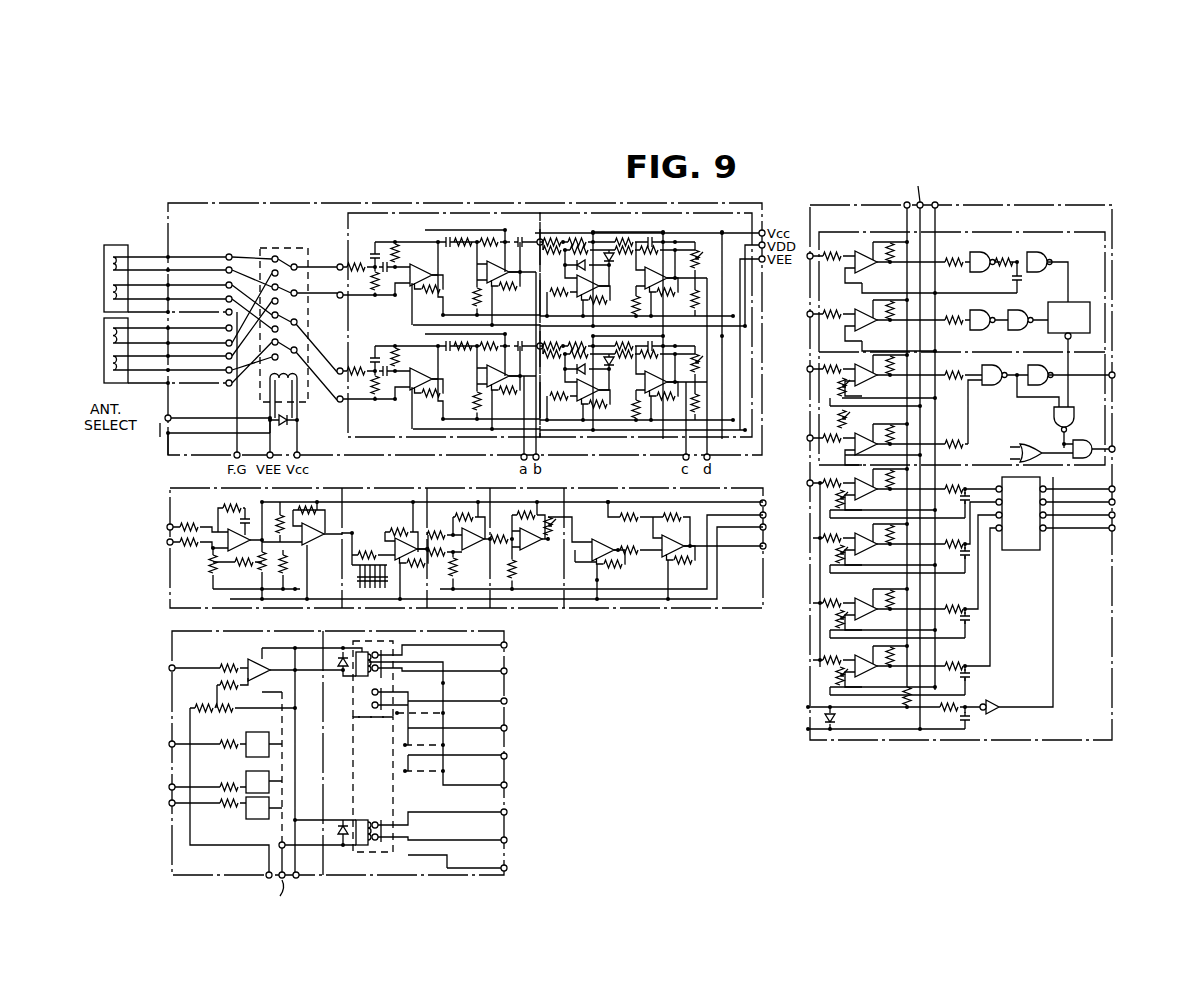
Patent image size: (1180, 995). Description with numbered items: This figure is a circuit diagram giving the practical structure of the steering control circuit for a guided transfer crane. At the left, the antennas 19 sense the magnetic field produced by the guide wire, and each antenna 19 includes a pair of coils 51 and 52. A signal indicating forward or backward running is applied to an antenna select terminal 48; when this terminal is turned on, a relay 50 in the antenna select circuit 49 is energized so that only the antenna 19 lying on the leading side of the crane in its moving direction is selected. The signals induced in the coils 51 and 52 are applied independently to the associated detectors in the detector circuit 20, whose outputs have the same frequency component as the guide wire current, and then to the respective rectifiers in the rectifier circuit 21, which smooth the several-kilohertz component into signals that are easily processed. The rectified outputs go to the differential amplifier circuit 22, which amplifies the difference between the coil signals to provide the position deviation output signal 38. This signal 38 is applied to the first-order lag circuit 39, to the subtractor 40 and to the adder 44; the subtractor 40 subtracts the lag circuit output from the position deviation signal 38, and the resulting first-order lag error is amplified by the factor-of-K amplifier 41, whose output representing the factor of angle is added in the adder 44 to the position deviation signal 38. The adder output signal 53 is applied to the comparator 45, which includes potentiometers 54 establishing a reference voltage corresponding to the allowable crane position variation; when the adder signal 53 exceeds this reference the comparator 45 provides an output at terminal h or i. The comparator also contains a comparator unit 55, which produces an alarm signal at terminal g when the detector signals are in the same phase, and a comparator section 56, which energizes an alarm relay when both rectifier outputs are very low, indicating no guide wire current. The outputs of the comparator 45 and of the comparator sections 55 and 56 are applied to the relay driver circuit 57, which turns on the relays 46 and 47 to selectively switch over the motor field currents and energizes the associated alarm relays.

The antenna 19 is at (155, 308).
The detector circuit 20 is at (369, 213).
The rectifier circuit 21 is at (558, 212).
The differential amplifier circuit 22 is at (185, 488).
The position deviation output signal 38 is at (342, 490).
The first-order lag circuit 39 is at (402, 487).
The subtractor 40 is at (467, 488).
The factor-of-K amplifier 41 is at (510, 488).
The adder 44 is at (628, 488).
The comparator 45 is at (1018, 205).
The relay 46 is at (374, 642).
The relay 47 is at (360, 702).
The antenna select terminal 48 is at (160, 437).
The antenna select circuit 49 is at (288, 203).
The relay 50 is at (289, 390).
The coil 51 is at (111, 262).
The coil 52 is at (111, 294).
The adder output signal 53 is at (820, 480).
The potentiometer 54 is at (830, 508).
The comparator unit 55 is at (1075, 232).
The comparator section 56 is at (1103, 441).
The relay driver circuit 57 is at (170, 646).